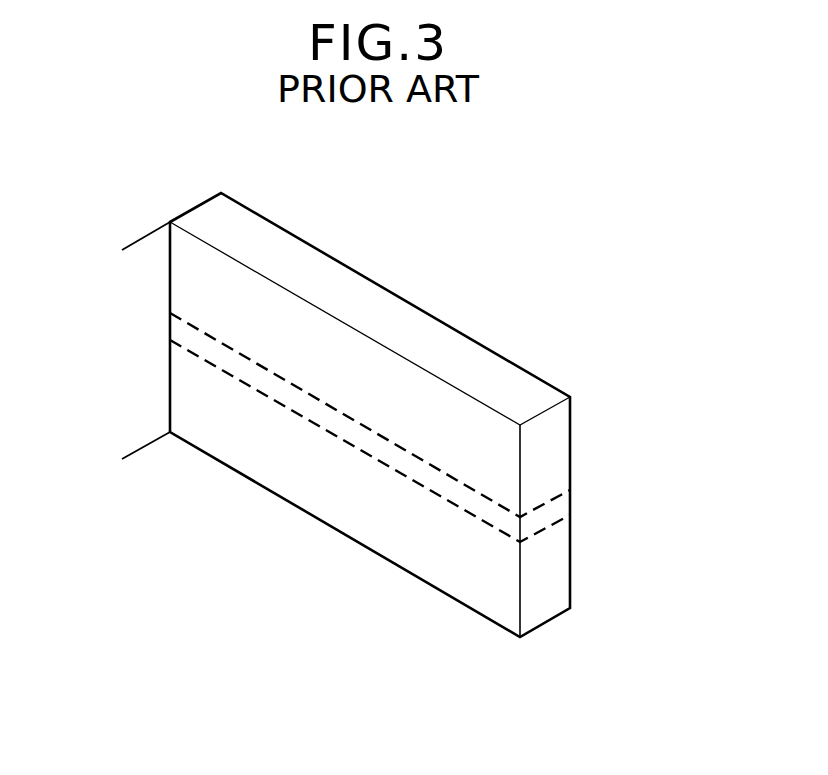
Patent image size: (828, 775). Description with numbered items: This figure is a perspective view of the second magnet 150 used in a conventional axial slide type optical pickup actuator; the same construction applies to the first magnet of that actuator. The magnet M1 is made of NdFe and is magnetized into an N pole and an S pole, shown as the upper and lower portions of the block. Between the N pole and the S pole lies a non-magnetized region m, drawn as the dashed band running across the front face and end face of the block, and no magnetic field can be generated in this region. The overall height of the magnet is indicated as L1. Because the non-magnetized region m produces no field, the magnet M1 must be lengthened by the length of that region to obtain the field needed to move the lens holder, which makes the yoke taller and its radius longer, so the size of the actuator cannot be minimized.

The second magnet 150 is at (428, 292).
The non-magnetized region m is at (563, 507).
The height of the second magnet L1 is at (146, 236).
The magnet M1 is at (412, 402).